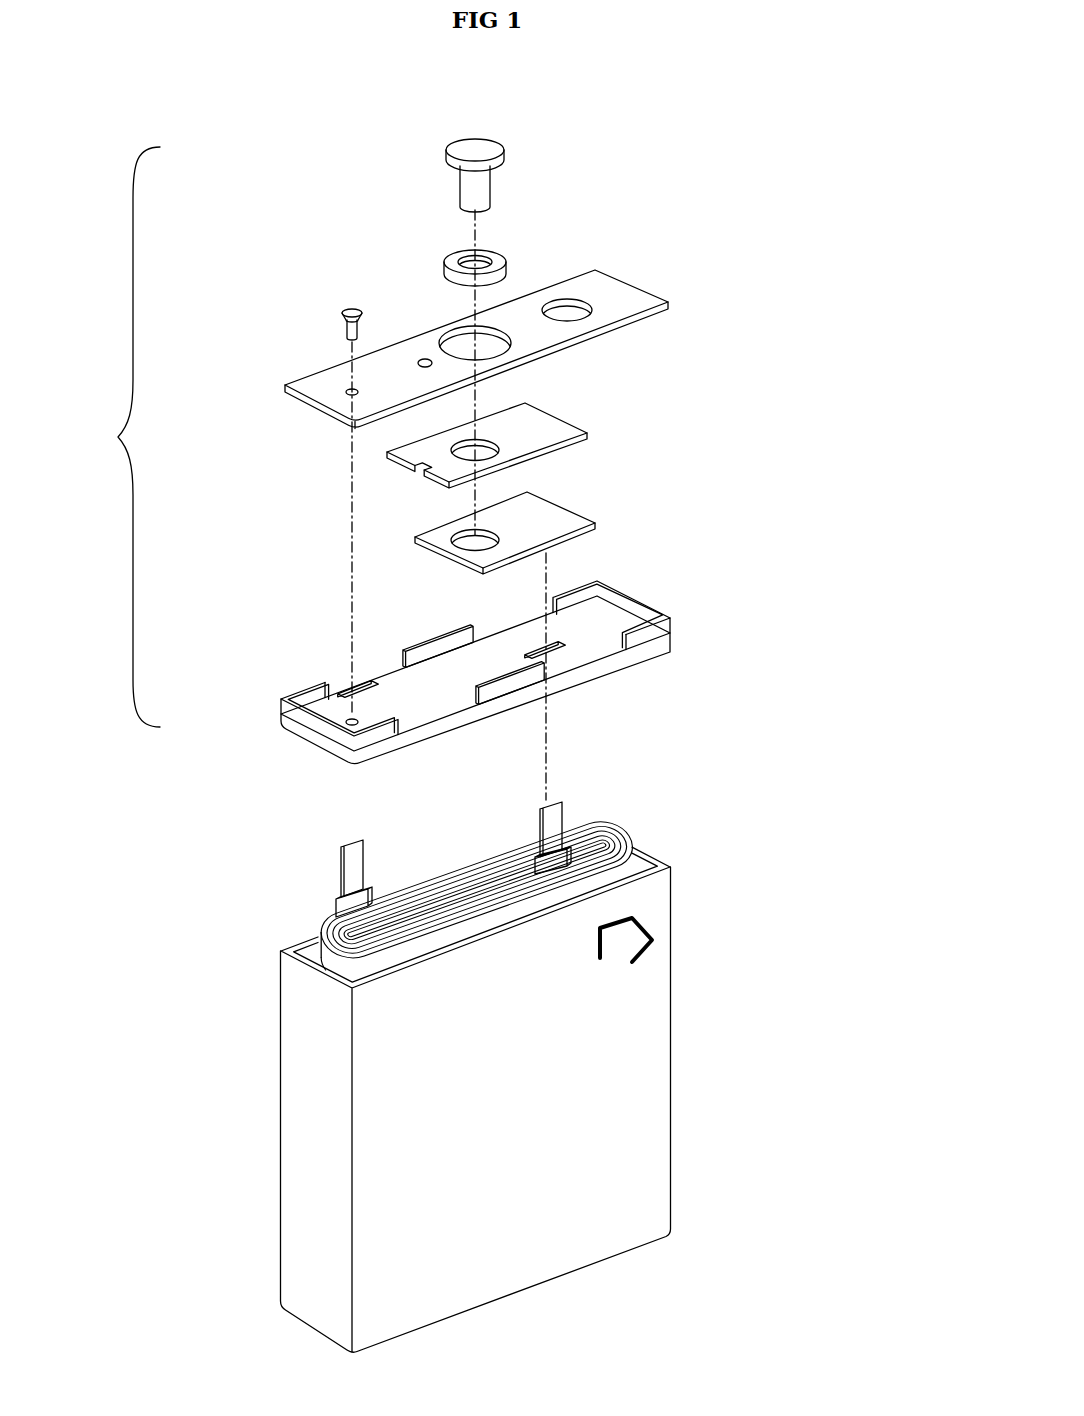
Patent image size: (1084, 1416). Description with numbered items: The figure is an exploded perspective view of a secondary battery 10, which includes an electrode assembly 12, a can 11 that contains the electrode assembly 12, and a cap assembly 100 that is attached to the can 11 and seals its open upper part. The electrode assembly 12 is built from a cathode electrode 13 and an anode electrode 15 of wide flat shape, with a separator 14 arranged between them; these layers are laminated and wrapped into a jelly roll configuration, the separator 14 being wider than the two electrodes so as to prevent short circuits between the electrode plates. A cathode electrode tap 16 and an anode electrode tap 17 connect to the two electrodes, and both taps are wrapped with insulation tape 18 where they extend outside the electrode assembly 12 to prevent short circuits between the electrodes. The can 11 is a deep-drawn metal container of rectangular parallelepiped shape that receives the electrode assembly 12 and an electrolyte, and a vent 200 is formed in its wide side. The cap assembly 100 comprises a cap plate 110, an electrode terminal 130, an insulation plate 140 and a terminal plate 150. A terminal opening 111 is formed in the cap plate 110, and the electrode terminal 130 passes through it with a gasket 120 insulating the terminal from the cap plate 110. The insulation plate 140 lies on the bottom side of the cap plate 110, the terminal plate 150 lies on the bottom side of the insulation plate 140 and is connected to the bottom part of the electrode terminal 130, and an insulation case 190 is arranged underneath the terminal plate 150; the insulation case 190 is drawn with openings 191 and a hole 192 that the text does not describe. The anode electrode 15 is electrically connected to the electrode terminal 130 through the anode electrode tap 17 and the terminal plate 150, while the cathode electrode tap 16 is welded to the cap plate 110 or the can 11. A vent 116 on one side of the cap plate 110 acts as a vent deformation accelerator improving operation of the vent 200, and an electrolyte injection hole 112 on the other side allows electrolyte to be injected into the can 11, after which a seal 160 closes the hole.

The secondary battery 10 is at (843, 492).
The can 11 is at (640, 1045).
The electrode assembly 12 is at (605, 748).
The cathode electrode 13 is at (627, 848).
The separator 14 is at (617, 842).
The anode electrode 15 is at (601, 842).
The cathode electrode tap 16 is at (353, 874).
The anode electrode tap 17 is at (553, 826).
The insulation tape 18 is at (367, 902).
The cap assembly 100 is at (58, 447).
The cap plate 110 is at (623, 296).
The terminal opening 111 is at (452, 343).
The electrolyte injection hole 112 is at (343, 391).
The vent 116 is at (564, 310).
The gasket 120 is at (455, 258).
The electrode terminal 130 is at (458, 152).
The insulation plate 140 is at (563, 430).
The terminal plate 150 is at (543, 517).
The seal 160 is at (349, 313).
The insulation case 190 is at (262, 657).
The tab holes 191 is at (547, 650).
The electrolyte passage hole 192 is at (333, 725).
The vent 200 is at (645, 927).